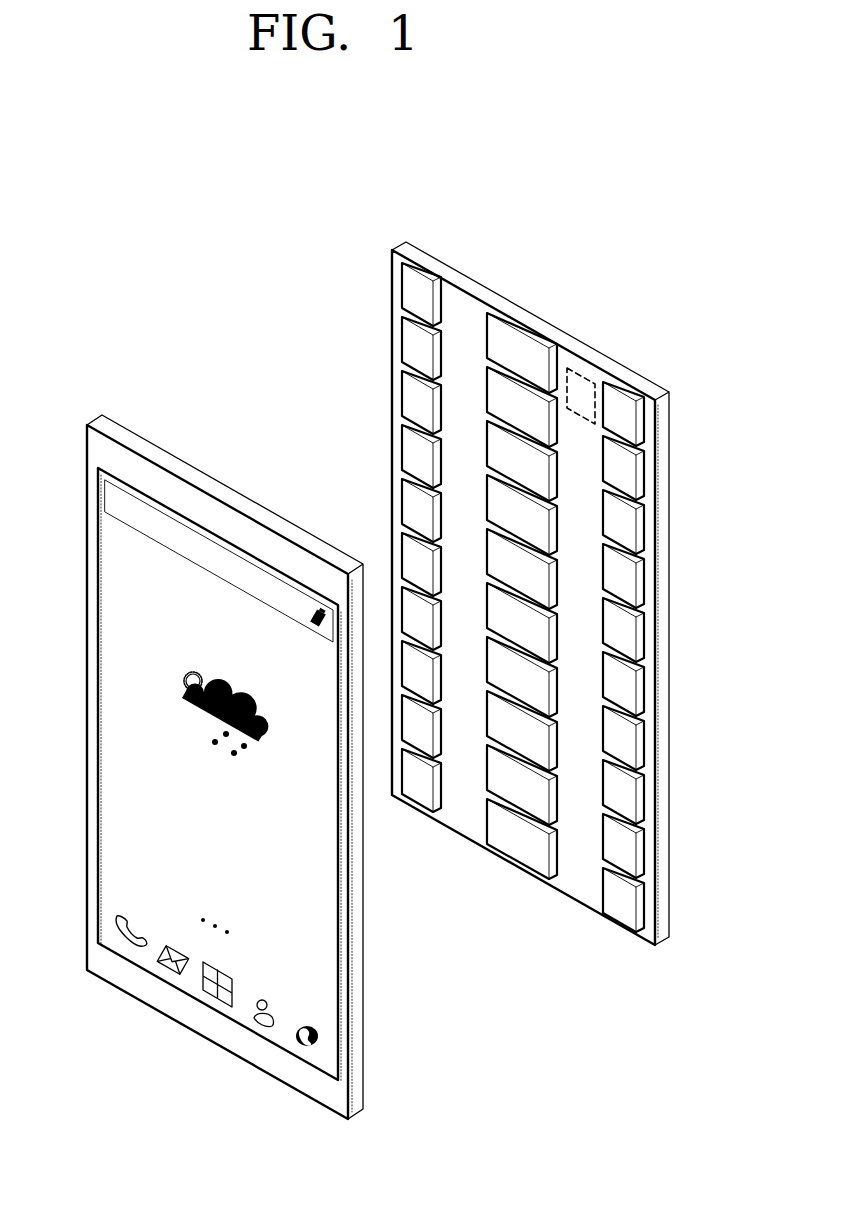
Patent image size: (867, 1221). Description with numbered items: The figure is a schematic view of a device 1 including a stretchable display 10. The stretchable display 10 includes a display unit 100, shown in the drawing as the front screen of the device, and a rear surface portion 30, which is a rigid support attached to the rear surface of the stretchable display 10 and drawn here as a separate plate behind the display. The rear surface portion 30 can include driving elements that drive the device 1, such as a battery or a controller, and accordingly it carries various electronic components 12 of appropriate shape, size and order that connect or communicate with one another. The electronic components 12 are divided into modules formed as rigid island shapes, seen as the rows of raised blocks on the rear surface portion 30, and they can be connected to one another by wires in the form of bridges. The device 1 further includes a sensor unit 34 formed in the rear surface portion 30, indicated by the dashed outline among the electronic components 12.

The device 1 is at (681, 218).
The stretchable display 10 is at (252, 508).
The display unit 100 is at (122, 775).
The rear surface portion 30 is at (565, 332).
The electronic components 12 is at (420, 463).
The sensor unit 34 is at (583, 378).